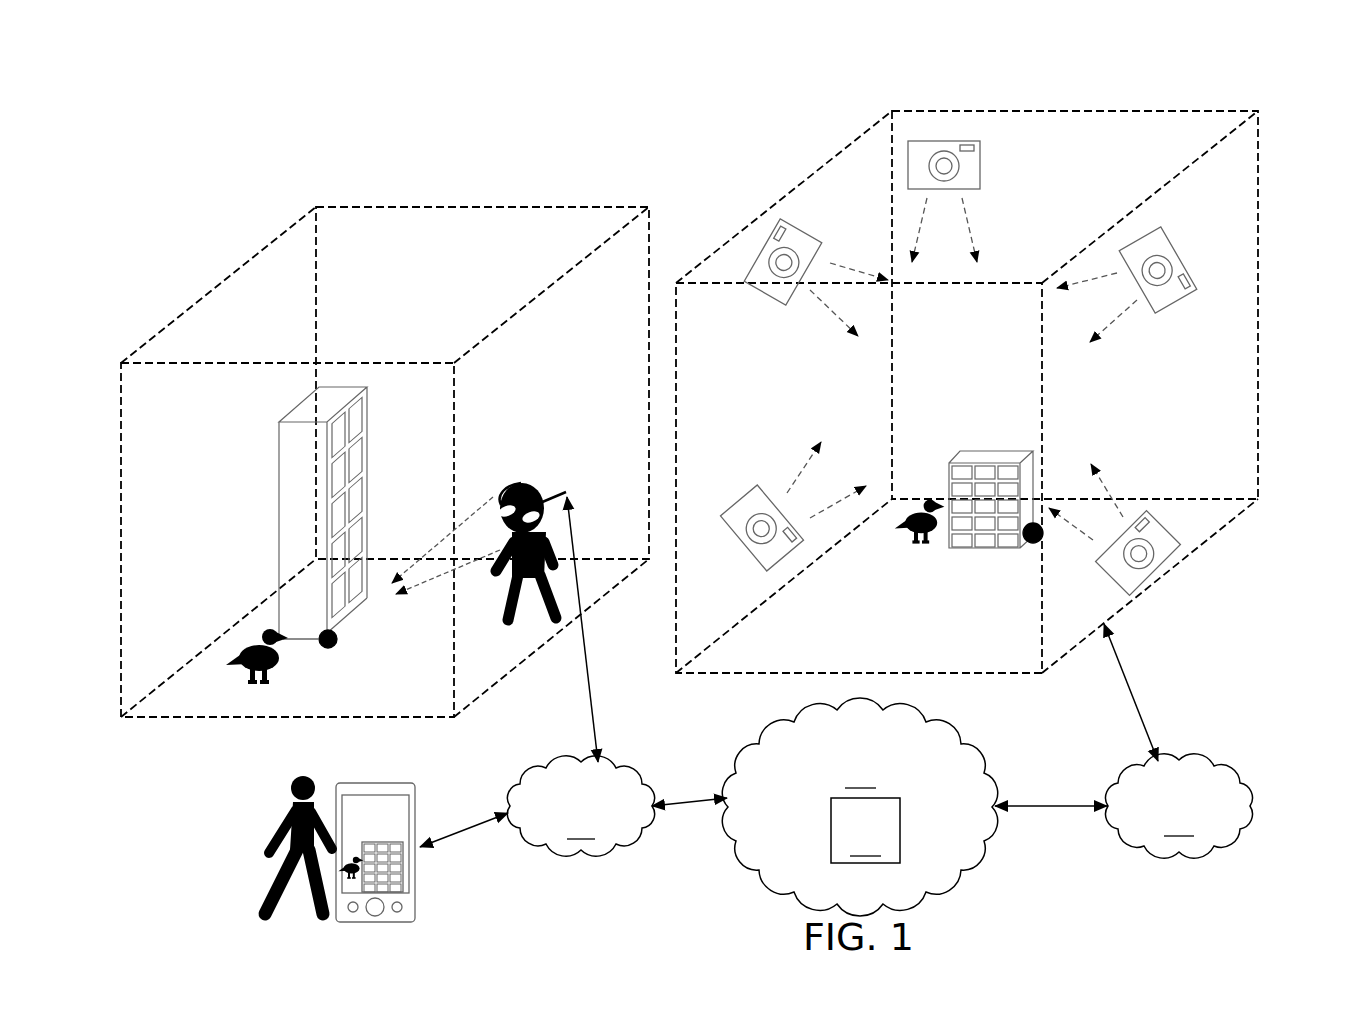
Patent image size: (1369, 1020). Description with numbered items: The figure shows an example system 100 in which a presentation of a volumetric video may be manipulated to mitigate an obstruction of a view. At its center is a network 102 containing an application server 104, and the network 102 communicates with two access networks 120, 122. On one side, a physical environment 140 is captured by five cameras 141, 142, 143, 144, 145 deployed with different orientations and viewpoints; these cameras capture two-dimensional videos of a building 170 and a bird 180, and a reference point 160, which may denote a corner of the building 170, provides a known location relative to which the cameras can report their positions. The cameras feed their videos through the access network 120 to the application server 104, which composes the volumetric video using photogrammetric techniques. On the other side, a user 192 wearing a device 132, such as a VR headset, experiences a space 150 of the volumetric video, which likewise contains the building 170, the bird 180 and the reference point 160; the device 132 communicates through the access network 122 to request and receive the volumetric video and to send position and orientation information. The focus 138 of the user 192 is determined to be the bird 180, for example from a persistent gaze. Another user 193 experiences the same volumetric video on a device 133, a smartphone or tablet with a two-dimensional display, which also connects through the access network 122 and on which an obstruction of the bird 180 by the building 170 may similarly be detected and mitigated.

The system 100 is at (137, 76).
The network 102 is at (859, 807).
The application server 104 is at (865, 830).
The access network 120 is at (1179, 806).
The access network 122 is at (580, 806).
The device 132 is at (566, 492).
The device 133 is at (417, 870).
The focus 138 is at (480, 497).
The physical environment 140 is at (1259, 297).
The camera 141 is at (1162, 568).
The camera 142 is at (793, 552).
The camera 143 is at (760, 237).
The camera 144 is at (908, 161).
The camera 145 is at (1172, 243).
The space 150 is at (578, 207).
The reference point 160 is at (336, 646).
The building 170 is at (349, 620).
The bird 180 is at (283, 681).
The user 192 is at (558, 625).
The user 193 is at (263, 910).